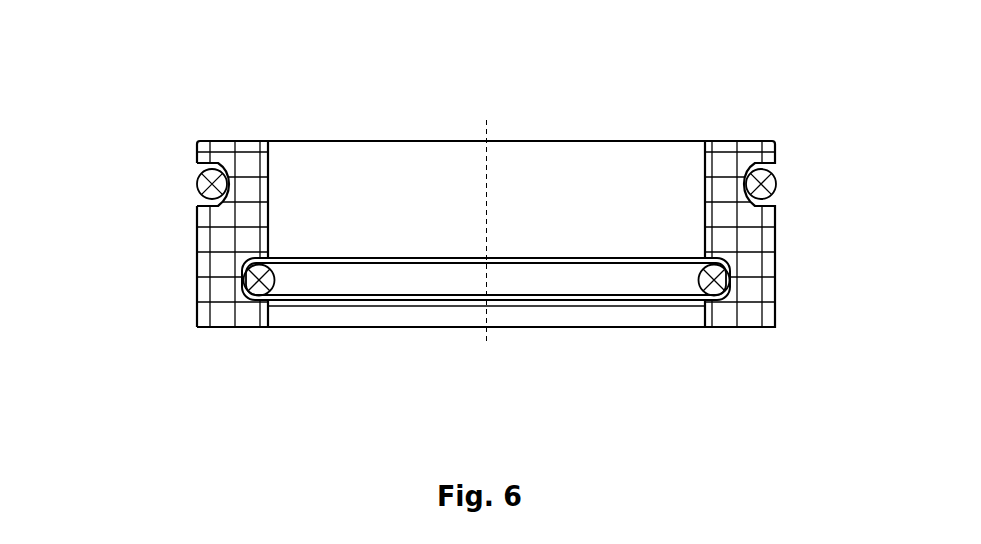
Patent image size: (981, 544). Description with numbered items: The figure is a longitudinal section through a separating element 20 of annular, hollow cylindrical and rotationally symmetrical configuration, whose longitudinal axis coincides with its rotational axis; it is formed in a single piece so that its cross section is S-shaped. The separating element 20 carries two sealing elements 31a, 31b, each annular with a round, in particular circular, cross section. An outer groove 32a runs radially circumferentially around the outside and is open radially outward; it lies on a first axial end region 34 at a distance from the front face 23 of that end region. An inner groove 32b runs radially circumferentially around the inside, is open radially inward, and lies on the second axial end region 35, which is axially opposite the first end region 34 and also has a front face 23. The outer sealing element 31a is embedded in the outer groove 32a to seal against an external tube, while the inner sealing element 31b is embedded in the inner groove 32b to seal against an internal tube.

The separating element 20 is at (808, 103).
The front face 23 is at (224, 139).
The outer sealing element 31a is at (196, 181).
The inner sealing element 31b is at (273, 308).
The outer groove 32a is at (197, 205).
The inner groove 32b is at (197, 267).
The first axial end region 34 is at (195, 146).
The second axial end region 35 is at (223, 329).